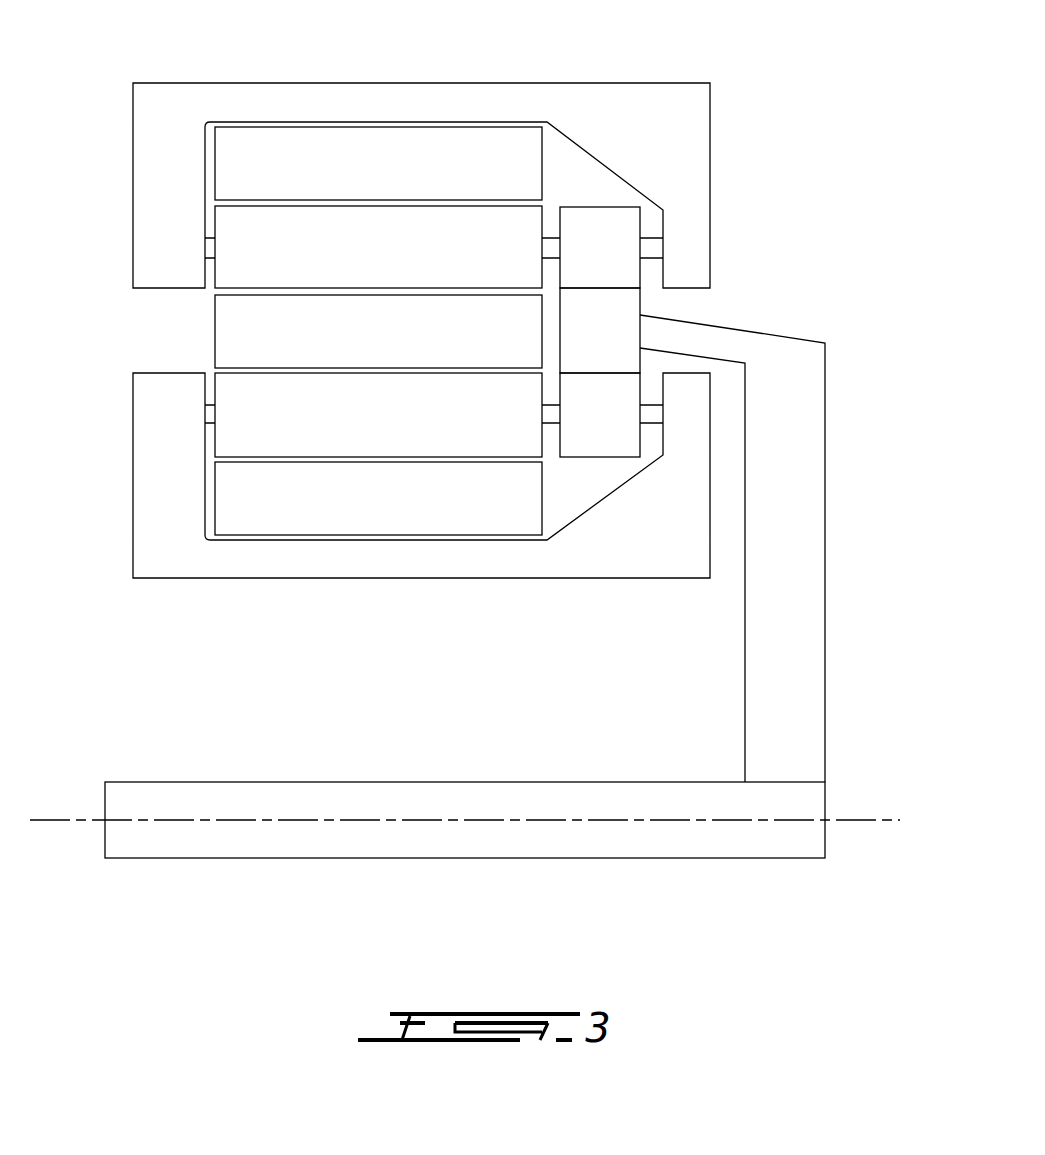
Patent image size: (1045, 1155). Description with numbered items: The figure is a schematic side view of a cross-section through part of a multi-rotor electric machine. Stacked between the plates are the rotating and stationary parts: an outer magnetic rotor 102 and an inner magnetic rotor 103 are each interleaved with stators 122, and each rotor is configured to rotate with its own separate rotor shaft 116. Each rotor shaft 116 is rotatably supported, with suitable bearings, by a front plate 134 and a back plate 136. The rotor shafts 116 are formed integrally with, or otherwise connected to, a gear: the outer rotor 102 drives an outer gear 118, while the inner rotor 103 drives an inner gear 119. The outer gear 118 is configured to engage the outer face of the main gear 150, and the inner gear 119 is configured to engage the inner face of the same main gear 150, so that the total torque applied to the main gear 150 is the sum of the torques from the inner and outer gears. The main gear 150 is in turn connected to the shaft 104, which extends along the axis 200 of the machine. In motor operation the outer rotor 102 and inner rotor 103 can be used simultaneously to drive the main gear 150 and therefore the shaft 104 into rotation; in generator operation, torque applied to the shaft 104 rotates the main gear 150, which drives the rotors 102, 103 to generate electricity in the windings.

The outer magnetic rotor 102 is at (349, 262).
The inner magnetic rotor 103 is at (349, 429).
The shaft 104 is at (491, 842).
The rotor shaft 116 is at (652, 240).
The outer gear 118 is at (575, 262).
The inner gear 119 is at (575, 428).
The stator 122 is at (349, 177).
The front plate 134 is at (690, 210).
The back plate 136 is at (143, 208).
The main gear 150 is at (575, 344).
The axis 200 is at (488, 824).